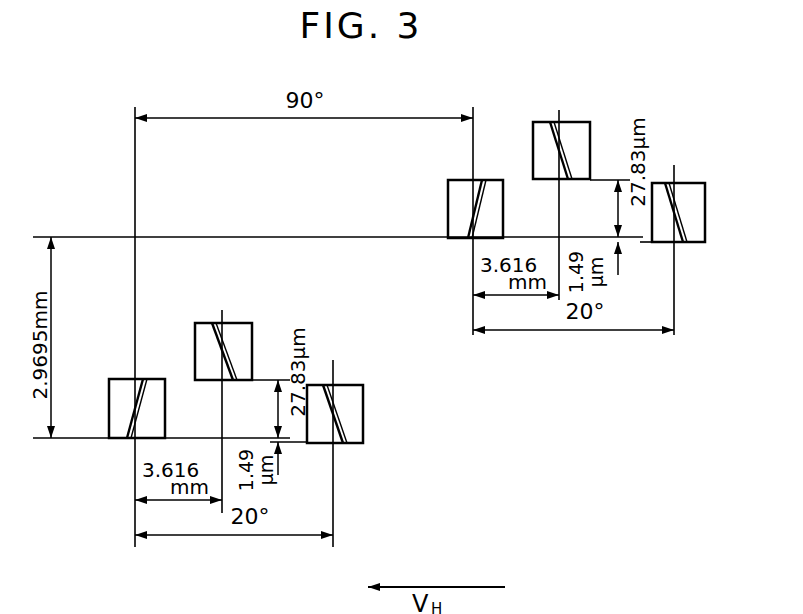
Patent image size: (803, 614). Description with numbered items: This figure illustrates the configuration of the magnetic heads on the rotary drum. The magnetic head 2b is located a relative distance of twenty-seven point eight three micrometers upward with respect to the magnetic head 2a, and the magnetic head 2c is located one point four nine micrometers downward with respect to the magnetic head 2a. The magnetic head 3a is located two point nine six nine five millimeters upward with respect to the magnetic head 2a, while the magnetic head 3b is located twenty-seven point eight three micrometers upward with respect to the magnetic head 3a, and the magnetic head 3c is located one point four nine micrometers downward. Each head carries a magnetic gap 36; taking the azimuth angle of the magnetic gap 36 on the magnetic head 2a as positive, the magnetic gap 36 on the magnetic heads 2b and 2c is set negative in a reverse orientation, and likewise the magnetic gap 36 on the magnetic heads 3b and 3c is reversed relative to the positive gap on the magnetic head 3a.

The magnetic head 2a is at (116, 417).
The magnetic head 2b is at (201, 326).
The magnetic head 2c is at (357, 403).
The magnetic head 3a is at (455, 196).
The magnetic head 3b is at (578, 136).
The magnetic head 3c is at (690, 198).
The magnetic gap 36 is at (138, 380).